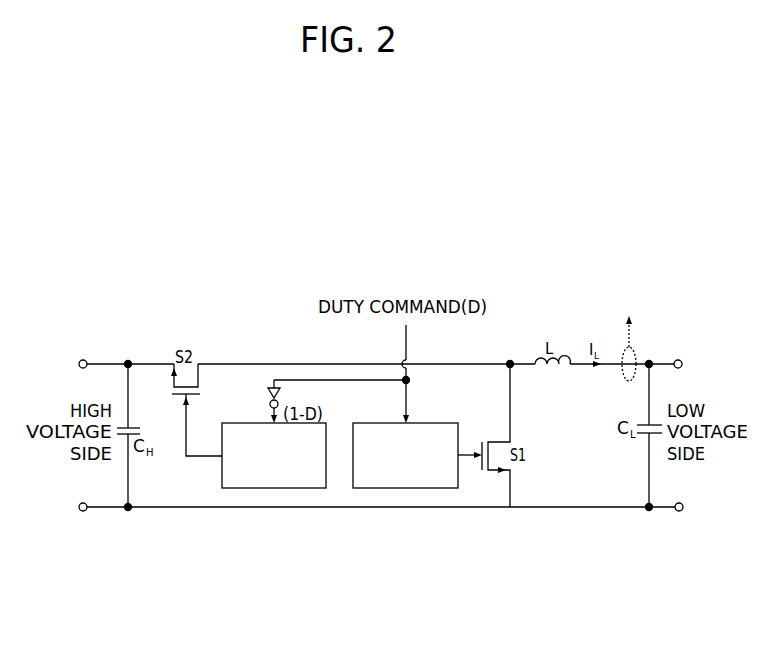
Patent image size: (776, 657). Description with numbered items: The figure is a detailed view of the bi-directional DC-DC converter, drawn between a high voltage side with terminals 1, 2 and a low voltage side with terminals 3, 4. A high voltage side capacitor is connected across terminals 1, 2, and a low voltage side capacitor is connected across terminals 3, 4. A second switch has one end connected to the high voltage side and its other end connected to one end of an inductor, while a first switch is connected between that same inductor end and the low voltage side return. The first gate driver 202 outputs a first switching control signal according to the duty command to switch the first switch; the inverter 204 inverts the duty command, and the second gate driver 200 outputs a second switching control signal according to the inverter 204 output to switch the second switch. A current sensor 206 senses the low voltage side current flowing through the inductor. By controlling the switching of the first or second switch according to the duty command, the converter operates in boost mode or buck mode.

The high voltage side first terminal 1 is at (75, 364).
The high voltage side second terminal 2 is at (75, 507).
The low voltage side first terminal 3 is at (684, 366).
The low voltage side second terminal 4 is at (685, 509).
The second gate driver 200 is at (269, 489).
The first gate driver 202 is at (423, 489).
The inverter 204 is at (268, 387).
The current sensor 206 is at (635, 352).